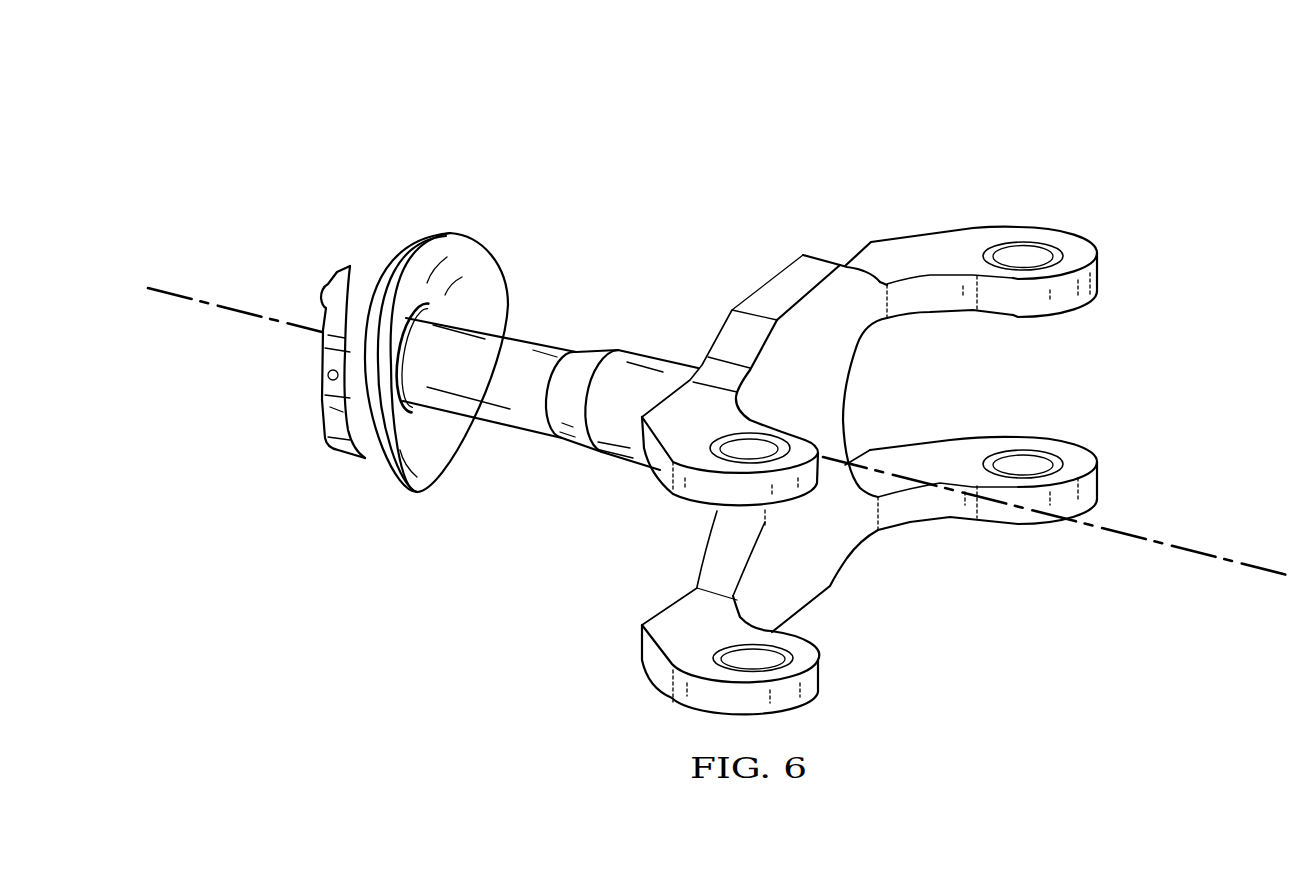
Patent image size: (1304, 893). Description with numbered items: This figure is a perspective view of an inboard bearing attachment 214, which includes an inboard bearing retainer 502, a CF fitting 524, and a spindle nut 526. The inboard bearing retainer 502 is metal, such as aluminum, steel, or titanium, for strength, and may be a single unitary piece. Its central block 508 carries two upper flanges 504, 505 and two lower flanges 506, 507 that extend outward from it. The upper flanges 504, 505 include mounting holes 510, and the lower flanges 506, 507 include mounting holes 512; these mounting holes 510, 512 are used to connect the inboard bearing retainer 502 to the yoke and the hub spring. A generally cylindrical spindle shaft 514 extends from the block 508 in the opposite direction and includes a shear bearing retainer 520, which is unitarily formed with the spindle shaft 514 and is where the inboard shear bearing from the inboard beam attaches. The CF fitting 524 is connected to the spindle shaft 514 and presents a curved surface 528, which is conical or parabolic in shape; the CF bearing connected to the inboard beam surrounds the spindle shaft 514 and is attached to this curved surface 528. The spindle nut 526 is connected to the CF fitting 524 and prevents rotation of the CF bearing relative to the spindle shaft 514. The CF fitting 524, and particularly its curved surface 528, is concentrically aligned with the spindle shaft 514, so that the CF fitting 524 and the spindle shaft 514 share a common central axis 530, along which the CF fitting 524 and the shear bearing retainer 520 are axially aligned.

The inboard bearing attachment 214 is at (831, 99).
The inboard bearing retainer 502 is at (777, 285).
The upper flange 504 is at (683, 502).
The upper flange 505 is at (1098, 272).
The lower flange 506 is at (817, 677).
The lower flange 507 is at (1099, 482).
The block 508 is at (843, 420).
The mounting holes 510 is at (773, 420).
The mounting holes 512 is at (1023, 464).
The spindle shaft 514 is at (531, 356).
The shear bearing retainer 520 is at (607, 462).
The CF fitting 524 is at (444, 233).
The spindle nut 526 is at (348, 278).
The curved surface 528 is at (497, 258).
The central axis 530 is at (1203, 550).